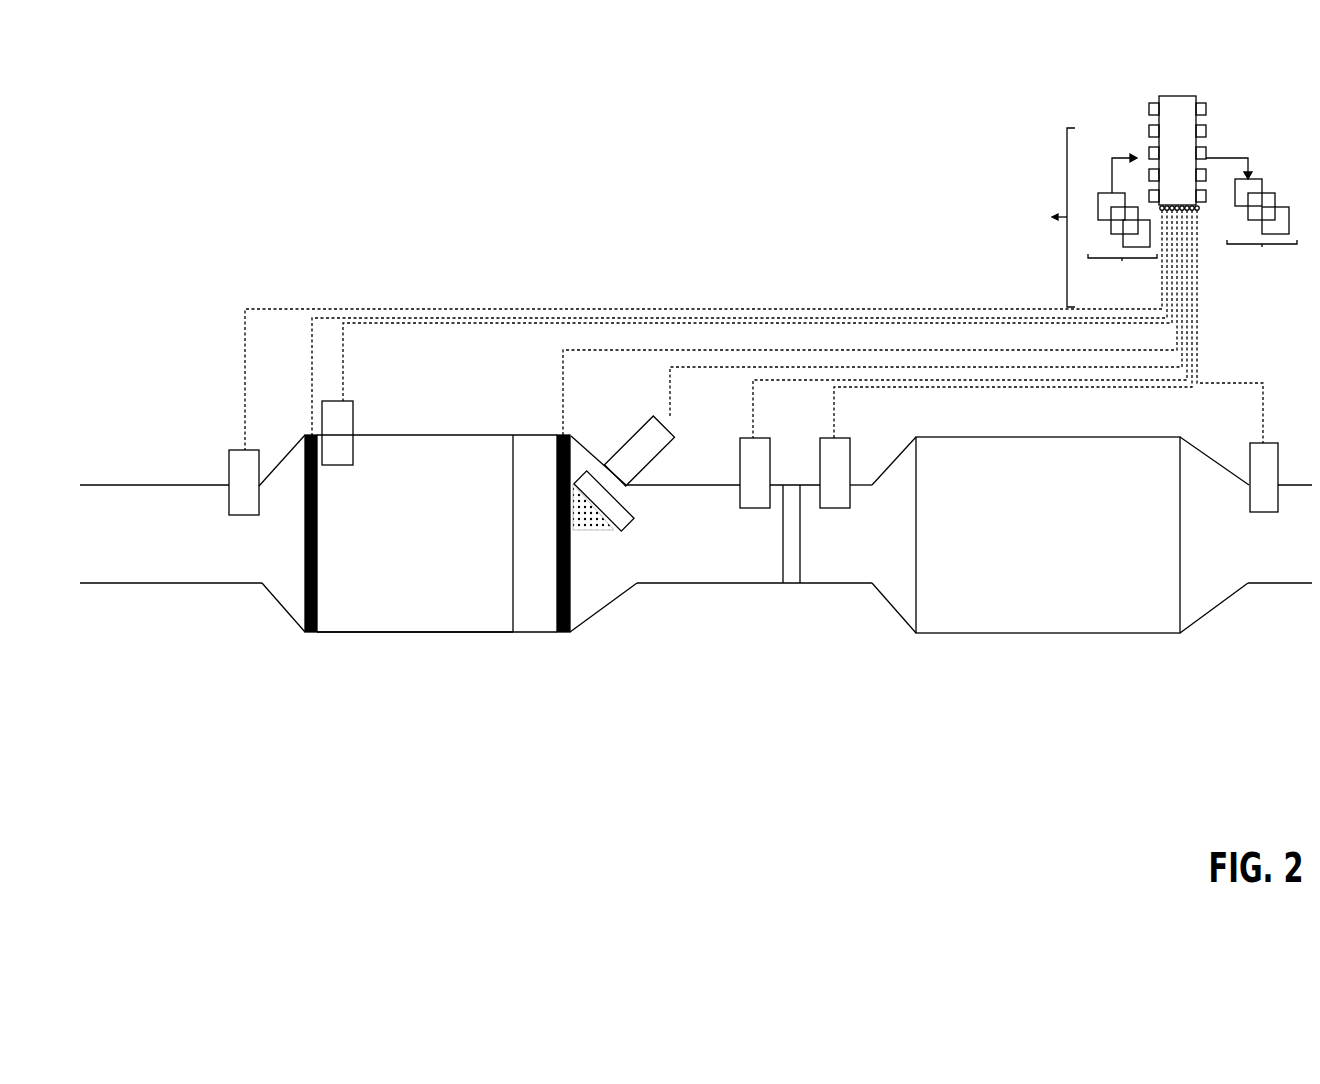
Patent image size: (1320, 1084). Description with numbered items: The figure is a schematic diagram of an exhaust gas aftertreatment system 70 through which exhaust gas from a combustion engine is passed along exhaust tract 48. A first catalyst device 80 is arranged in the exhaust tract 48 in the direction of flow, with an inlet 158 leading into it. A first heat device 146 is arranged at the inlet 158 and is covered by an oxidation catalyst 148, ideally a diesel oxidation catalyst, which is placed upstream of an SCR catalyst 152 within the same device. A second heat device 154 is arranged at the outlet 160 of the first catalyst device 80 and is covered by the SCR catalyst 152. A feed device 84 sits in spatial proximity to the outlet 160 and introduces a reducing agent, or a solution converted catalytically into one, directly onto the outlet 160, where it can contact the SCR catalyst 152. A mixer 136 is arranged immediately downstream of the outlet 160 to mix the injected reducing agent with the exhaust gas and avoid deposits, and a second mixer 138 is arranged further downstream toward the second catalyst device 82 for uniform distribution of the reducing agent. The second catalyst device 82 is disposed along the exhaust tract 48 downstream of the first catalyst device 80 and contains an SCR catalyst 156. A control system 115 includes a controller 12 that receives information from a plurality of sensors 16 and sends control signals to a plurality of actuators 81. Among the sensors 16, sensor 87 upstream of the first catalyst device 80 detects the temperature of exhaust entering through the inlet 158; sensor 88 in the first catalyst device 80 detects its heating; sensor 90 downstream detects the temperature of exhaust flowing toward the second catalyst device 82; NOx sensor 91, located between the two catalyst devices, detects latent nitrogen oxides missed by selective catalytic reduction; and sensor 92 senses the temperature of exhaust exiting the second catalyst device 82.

The controller 12 is at (1177, 153).
The sensors 16 is at (1122, 228).
The actuators 81 is at (1251, 222).
The control system 115 is at (1031, 217).
The exhaust gas passage 48 is at (101, 538).
The inlet 158 is at (273, 547).
The sensor 87 is at (253, 450).
The first heat device 146 is at (307, 632).
The sensor 88 is at (353, 401).
The first catalyst device 80 is at (424, 552).
The oxidation catalyst 148 is at (393, 617).
The SCR catalyst 152 is at (532, 620).
The second heat device 154 is at (567, 620).
The feed device 84 is at (652, 416).
The mixer 136 is at (573, 477).
The outlet 160 is at (721, 558).
The sensor 90 is at (770, 438).
The mixer 138 is at (793, 575).
The NOx sensor 91 is at (850, 440).
The second catalyst device 82 is at (1036, 548).
The SCR catalyst 156 is at (1142, 568).
The sensor 92 is at (1250, 458).
The exhaust gas aftertreatment system 70 is at (758, 774).